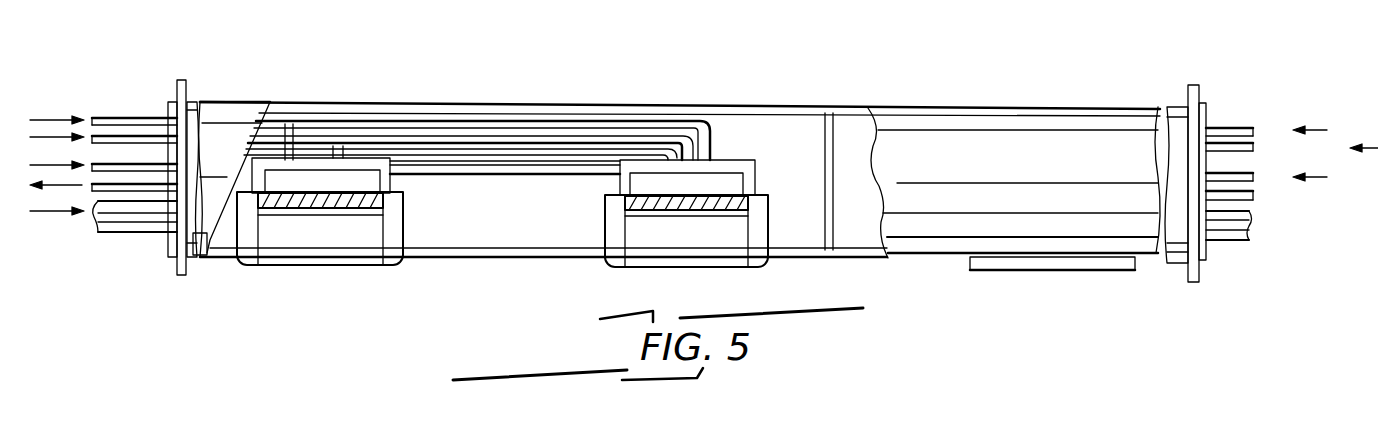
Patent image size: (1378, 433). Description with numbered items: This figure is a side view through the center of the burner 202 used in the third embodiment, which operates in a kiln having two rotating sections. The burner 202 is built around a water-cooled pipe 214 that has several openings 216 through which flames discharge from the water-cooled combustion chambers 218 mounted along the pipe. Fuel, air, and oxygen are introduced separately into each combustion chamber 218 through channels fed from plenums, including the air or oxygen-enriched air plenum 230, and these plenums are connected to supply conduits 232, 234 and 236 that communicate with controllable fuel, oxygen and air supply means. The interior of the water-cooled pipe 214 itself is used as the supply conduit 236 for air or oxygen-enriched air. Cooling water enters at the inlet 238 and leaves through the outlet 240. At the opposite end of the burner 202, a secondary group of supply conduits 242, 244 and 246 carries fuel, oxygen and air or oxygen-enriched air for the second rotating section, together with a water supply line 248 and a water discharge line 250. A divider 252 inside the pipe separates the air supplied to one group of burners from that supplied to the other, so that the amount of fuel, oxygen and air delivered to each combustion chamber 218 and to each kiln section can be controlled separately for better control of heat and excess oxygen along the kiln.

The burner 202 is at (975, 118).
The water-cooled pipe 214 is at (716, 103).
The openings 216 is at (1021, 263).
The combustion chambers 218 is at (307, 247).
The air or oxygen-enriched air plenum 230 is at (518, 228).
The supply conduit 232 is at (126, 116).
The supply conduit 234 is at (140, 140).
The supply conduit 236 is at (140, 230).
The inlet 238 is at (111, 132).
The outlet 240 is at (113, 197).
The supply conduit 242 is at (1230, 127).
The supply conduit 244 is at (1251, 148).
The supply conduit 246 is at (1238, 243).
The water supply line 248 is at (1247, 170).
The water discharge line 250 is at (1253, 197).
The divider 252 is at (819, 125).